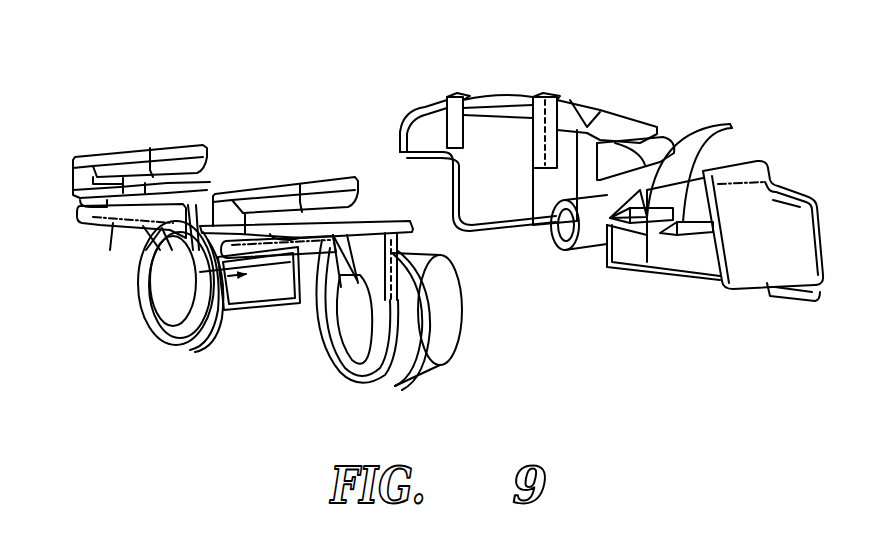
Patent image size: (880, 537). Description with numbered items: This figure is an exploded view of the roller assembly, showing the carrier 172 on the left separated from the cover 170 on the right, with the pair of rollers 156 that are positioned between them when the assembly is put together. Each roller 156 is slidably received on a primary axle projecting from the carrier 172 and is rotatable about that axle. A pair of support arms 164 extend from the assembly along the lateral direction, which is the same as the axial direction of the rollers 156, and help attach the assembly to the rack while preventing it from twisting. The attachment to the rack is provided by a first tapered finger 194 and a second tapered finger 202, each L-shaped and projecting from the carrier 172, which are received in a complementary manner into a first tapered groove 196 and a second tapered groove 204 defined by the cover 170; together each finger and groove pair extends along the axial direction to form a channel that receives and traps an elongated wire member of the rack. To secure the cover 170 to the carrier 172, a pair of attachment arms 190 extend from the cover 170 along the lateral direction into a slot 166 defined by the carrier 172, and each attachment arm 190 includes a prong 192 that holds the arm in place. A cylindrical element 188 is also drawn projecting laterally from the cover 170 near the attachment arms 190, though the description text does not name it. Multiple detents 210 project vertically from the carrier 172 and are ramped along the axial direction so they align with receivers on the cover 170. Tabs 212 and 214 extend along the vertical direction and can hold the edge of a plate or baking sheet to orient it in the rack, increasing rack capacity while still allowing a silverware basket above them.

The roller 156 is at (250, 317).
The support arm 164 is at (117, 220).
The slot 166 is at (190, 300).
The cover 170 is at (577, 110).
The carrier 172 is at (317, 347).
The cylindrical boss 188 is at (593, 237).
The attachment arm 190 is at (727, 125).
The prong 192 is at (662, 248).
The first tapered finger 194 is at (173, 145).
The first tapered groove 196 is at (545, 88).
The second tapered finger 202 is at (300, 180).
The second tapered groove 204 is at (692, 122).
The detent 210 is at (150, 177).
The tab 212 is at (440, 92).
The tab 214 is at (531, 108).